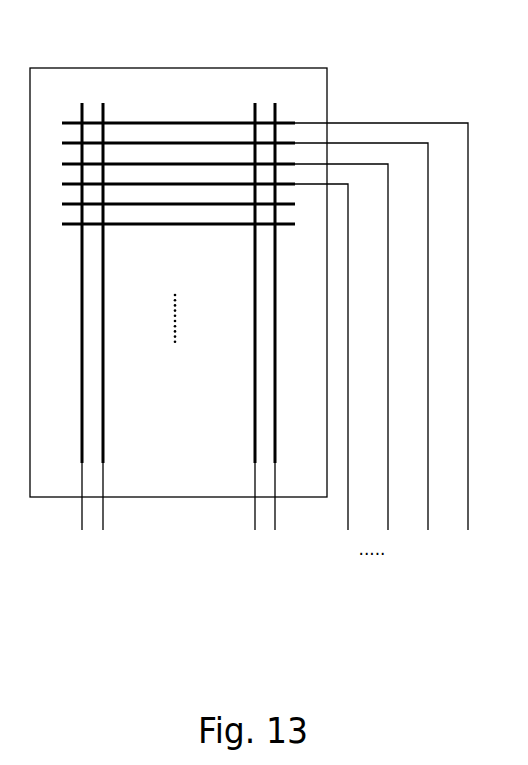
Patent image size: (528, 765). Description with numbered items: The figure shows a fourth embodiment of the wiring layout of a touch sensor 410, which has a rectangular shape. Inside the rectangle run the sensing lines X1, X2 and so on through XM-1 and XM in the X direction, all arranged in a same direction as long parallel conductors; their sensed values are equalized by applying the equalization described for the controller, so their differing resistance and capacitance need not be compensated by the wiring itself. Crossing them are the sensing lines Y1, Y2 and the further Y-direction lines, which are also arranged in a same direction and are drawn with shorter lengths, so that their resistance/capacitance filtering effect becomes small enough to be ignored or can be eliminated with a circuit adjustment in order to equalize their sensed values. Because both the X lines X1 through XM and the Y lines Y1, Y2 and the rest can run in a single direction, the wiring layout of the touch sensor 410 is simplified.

The touch sensor 410 is at (175, 68).
The sensing line in the X direction X1 is at (75, 331).
The sensing line in the X direction X2 is at (107, 331).
The sensing line in the X direction XM-1 is at (239, 331).
The sensing line in the X direction XM is at (288, 331).
The sensing line in the Y direction Y1 is at (387, 341).
The sensing line in the Y direction Y2 is at (367, 351).